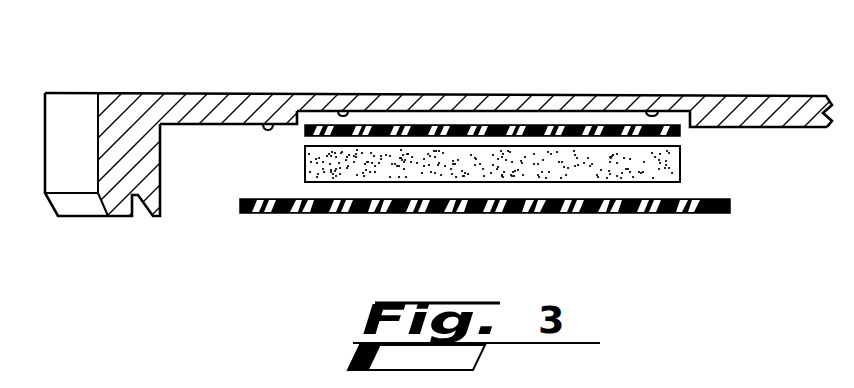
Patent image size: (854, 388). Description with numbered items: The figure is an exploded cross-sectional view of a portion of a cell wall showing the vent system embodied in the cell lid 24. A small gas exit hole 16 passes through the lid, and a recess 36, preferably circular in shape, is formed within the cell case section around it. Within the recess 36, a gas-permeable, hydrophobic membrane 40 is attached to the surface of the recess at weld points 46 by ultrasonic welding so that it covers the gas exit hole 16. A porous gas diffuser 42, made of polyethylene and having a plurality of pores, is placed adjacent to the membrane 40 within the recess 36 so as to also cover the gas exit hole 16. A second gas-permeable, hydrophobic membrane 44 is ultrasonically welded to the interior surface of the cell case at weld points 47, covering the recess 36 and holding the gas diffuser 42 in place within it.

The gas exit hole 16 is at (488, 96).
The cell lid 24 is at (128, 93).
The recess 36 is at (290, 111).
The gas-permeable, hydrophobic membrane 40 is at (681, 135).
The porous gas diffuser 42 is at (681, 162).
The gas-permeable, hydrophobic membrane 44 is at (702, 214).
The weld points 46 is at (663, 110).
The weld points 47 is at (713, 128).